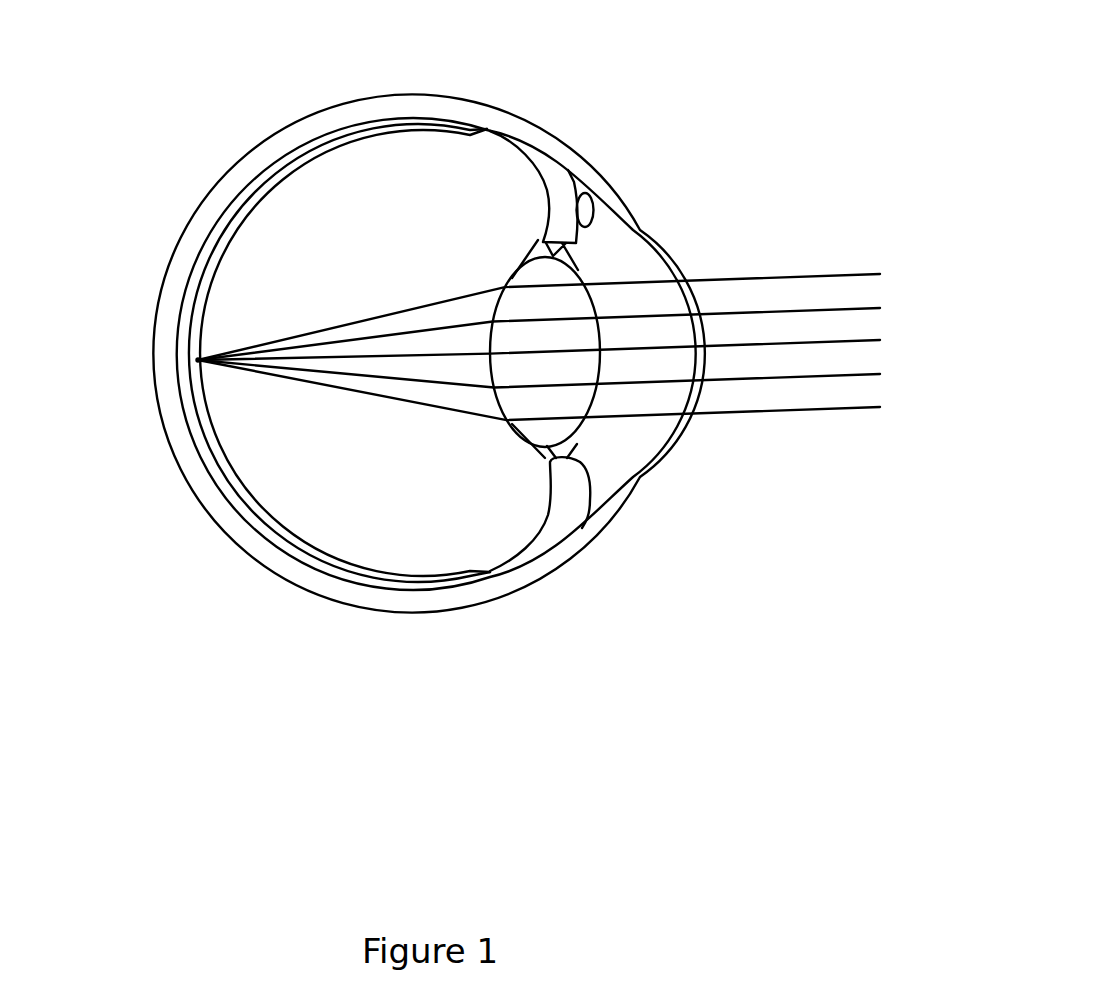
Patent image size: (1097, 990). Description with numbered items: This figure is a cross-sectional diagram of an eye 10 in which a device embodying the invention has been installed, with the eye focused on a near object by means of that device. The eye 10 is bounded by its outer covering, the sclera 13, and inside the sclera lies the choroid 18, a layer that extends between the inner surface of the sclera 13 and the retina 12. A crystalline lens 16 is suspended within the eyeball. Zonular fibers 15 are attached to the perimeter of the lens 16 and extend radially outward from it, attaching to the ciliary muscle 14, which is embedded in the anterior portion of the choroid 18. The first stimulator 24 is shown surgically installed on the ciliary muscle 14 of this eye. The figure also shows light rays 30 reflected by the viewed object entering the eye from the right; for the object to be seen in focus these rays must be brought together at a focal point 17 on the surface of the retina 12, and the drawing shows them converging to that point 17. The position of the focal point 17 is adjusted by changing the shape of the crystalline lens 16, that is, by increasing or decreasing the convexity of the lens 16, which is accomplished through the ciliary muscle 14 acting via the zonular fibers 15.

The eye 10 is at (182, 592).
The retina 12 is at (256, 202).
The sclera 13 is at (323, 585).
The ciliary muscle 14 is at (560, 190).
The zonular fibers 15 is at (573, 248).
The crystalline lens 16 is at (570, 333).
The focal point 17 is at (198, 360).
The choroid 18 is at (312, 146).
The first stimulator 24 is at (584, 208).
The light rays 30 is at (767, 380).